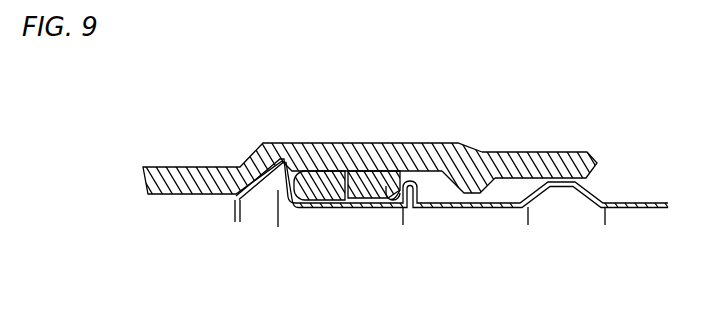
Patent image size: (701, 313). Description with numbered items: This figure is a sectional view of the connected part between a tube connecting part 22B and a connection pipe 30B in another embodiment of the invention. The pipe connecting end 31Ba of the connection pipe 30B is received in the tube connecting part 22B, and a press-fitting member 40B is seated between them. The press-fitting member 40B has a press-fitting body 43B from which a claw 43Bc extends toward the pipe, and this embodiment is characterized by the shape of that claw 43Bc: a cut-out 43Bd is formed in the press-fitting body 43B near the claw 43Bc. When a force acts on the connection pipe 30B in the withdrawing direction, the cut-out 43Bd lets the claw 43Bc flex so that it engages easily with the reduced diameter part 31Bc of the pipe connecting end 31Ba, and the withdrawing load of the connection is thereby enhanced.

The connection pipe 30B is at (188, 167).
The pipe connecting end 31Ba is at (298, 143).
The reduced diameter part 31Bc is at (474, 158).
The press-fitting member 40B is at (349, 170).
The press-fitting body 43B is at (378, 170).
The cut-out 43Bd is at (430, 175).
The claw 43Bc is at (443, 172).
The tube connecting part 22B is at (329, 207).